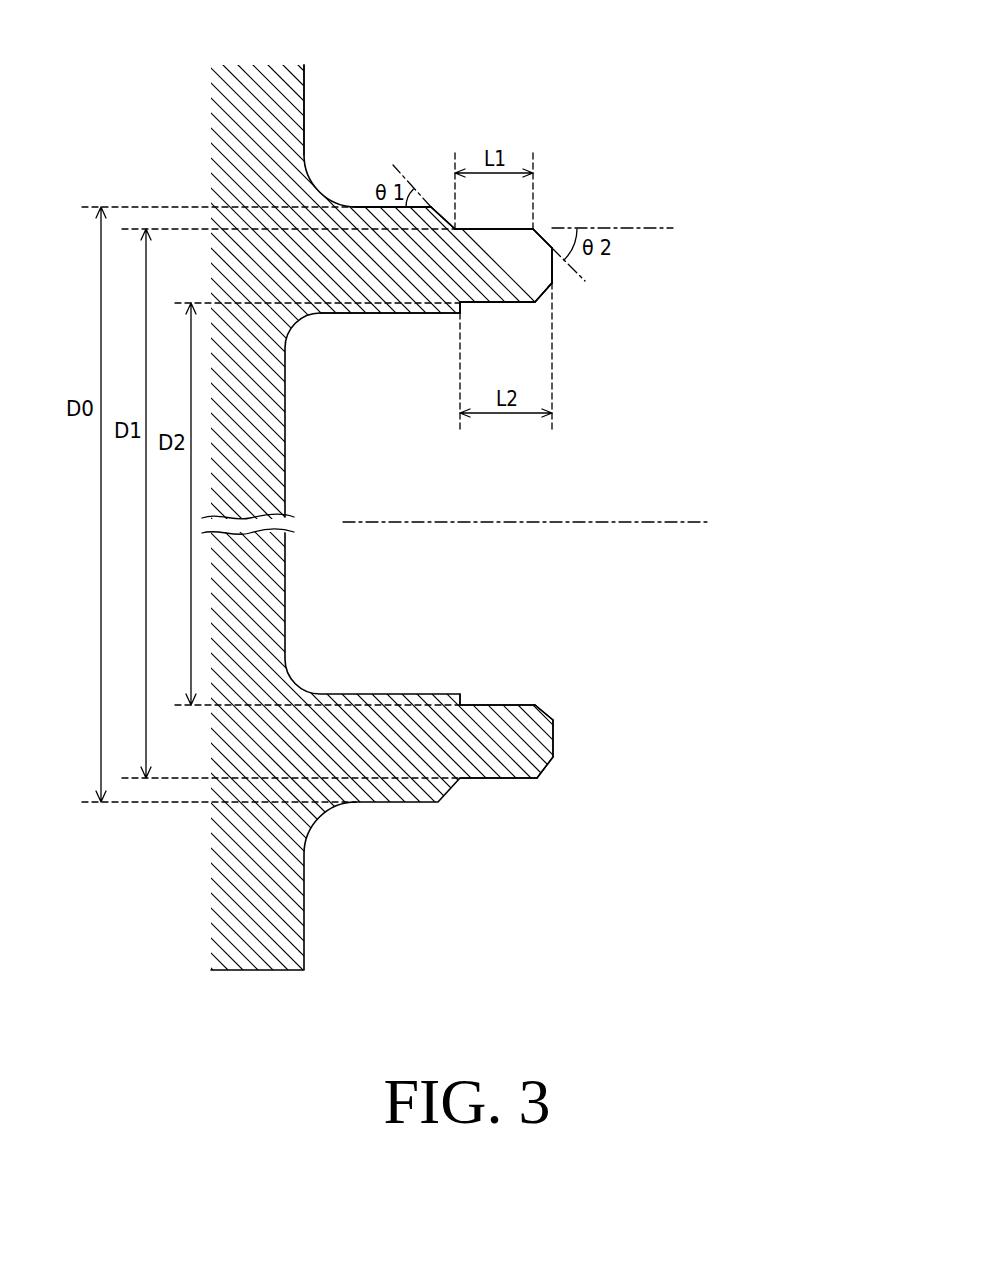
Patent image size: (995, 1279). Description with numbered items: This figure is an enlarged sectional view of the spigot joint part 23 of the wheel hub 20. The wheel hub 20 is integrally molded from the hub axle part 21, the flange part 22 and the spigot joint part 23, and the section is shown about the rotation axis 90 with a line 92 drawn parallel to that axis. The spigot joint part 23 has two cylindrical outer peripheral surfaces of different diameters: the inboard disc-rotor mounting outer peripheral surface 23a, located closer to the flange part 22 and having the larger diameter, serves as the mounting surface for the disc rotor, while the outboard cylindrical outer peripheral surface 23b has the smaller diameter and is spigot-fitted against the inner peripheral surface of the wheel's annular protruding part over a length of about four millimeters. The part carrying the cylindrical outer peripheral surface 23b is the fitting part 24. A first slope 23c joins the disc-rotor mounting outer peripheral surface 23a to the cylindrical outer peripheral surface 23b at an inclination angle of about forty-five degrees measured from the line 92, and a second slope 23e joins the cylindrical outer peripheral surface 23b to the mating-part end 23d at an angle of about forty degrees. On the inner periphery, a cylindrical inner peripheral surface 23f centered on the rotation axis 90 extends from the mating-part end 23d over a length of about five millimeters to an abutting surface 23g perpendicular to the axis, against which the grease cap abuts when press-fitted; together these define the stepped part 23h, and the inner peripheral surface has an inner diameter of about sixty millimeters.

The wheel hub 20 is at (202, 100).
The hub axle part 21 is at (270, 508).
The flange part 22 is at (238, 80).
The spigot joint part 23 is at (378, 252).
The disc-rotor mounting outer peripheral surface 23a is at (361, 207).
The cylindrical outer peripheral surface 23b is at (487, 228).
The first slope 23c is at (438, 211).
The mating-part end 23d is at (553, 265).
The second slope 23e is at (545, 238).
The cylindrical inner peripheral surface 23f is at (517, 303).
The abutting surface 23g is at (463, 308).
The stepped part 23h is at (452, 322).
The fitting part 24 is at (545, 290).
The rotation axis 90 is at (682, 523).
The line parallel to the rotation axis 92 is at (650, 223).